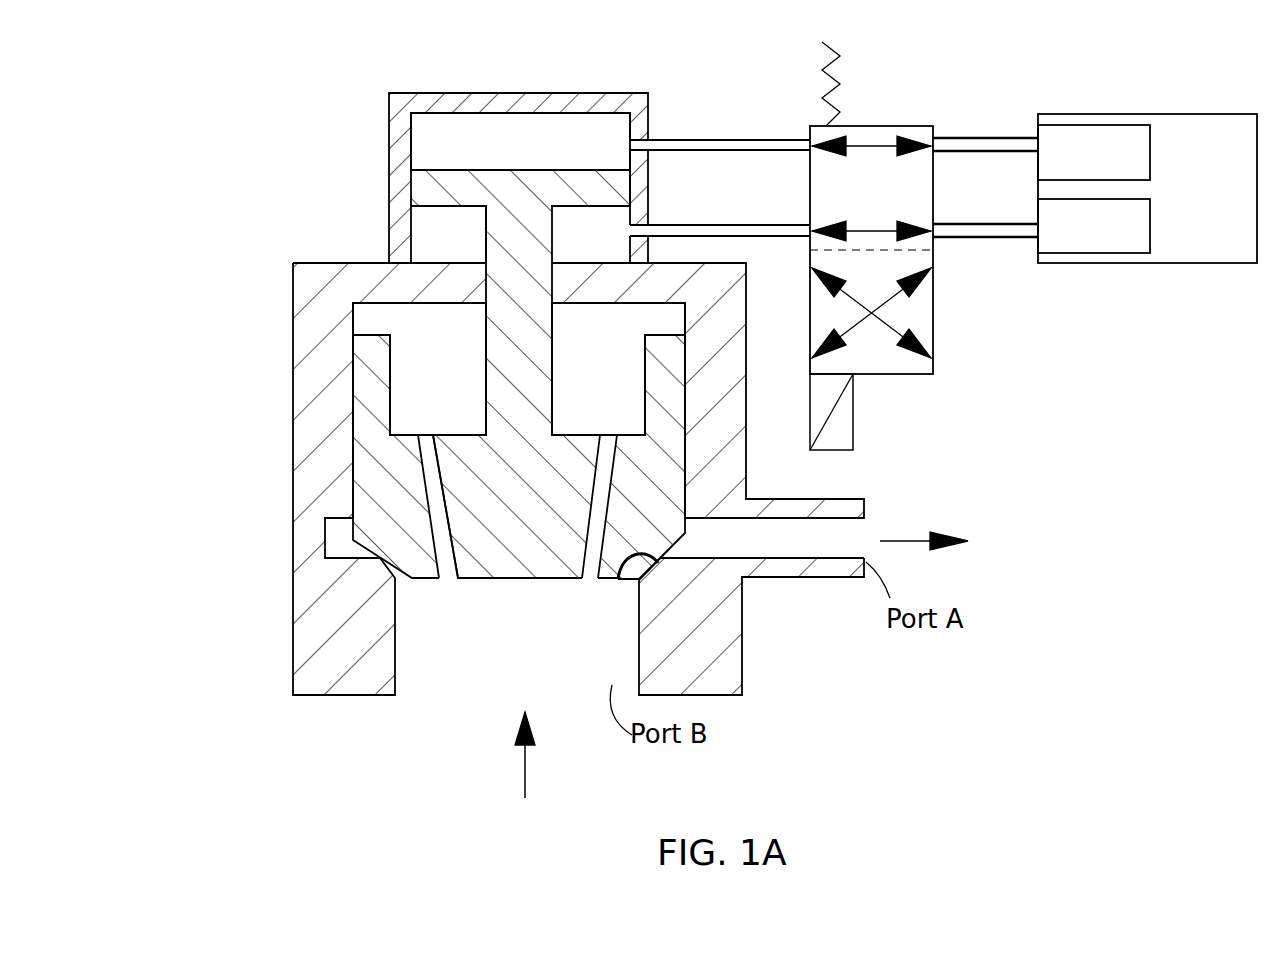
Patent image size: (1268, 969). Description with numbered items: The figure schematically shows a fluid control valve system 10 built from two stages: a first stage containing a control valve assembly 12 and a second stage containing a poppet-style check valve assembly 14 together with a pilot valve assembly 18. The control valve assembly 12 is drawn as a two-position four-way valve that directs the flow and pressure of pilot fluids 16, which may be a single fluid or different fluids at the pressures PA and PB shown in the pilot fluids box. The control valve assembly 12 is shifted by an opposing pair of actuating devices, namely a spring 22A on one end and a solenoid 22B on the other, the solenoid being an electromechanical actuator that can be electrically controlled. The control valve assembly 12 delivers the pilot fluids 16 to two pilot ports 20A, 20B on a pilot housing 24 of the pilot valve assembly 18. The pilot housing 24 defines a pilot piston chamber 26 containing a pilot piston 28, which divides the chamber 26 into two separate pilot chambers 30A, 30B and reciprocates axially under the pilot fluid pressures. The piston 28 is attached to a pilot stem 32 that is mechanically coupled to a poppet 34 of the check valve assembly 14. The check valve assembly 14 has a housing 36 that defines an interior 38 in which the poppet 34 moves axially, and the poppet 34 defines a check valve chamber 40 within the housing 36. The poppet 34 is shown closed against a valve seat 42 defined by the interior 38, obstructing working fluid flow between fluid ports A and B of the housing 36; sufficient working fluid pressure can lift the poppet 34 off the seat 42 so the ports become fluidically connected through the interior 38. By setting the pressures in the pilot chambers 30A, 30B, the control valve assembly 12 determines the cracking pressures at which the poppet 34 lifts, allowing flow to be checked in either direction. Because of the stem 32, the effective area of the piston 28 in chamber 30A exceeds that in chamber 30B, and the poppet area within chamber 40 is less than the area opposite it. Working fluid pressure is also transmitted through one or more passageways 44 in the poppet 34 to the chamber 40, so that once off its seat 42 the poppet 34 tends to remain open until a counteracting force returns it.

The fluid control valve system 10 is at (272, 138).
The control valve assembly 12 is at (905, 120).
The check valve assembly 14 is at (192, 493).
The pilot fluids 16 is at (1095, 188).
The pilot valve assembly 18 is at (660, 87).
The pilot port 20A is at (650, 140).
The pilot port 20B is at (650, 225).
The spring 22A is at (838, 76).
The solenoid 22B is at (856, 428).
The pilot housing 24 is at (496, 102).
The pilot piston chamber 26 is at (620, 117).
The pilot piston 28 is at (536, 178).
The pilot chamber 30A is at (480, 158).
The pilot chamber 30B is at (460, 250).
The pilot stem 32 is at (540, 255).
The poppet 34 is at (355, 466).
The check valve housing 36 is at (303, 284).
The interior 38 is at (428, 307).
The check valve chamber 40 is at (595, 387).
The valve seat 42 is at (618, 583).
The passageways 44 is at (458, 582).